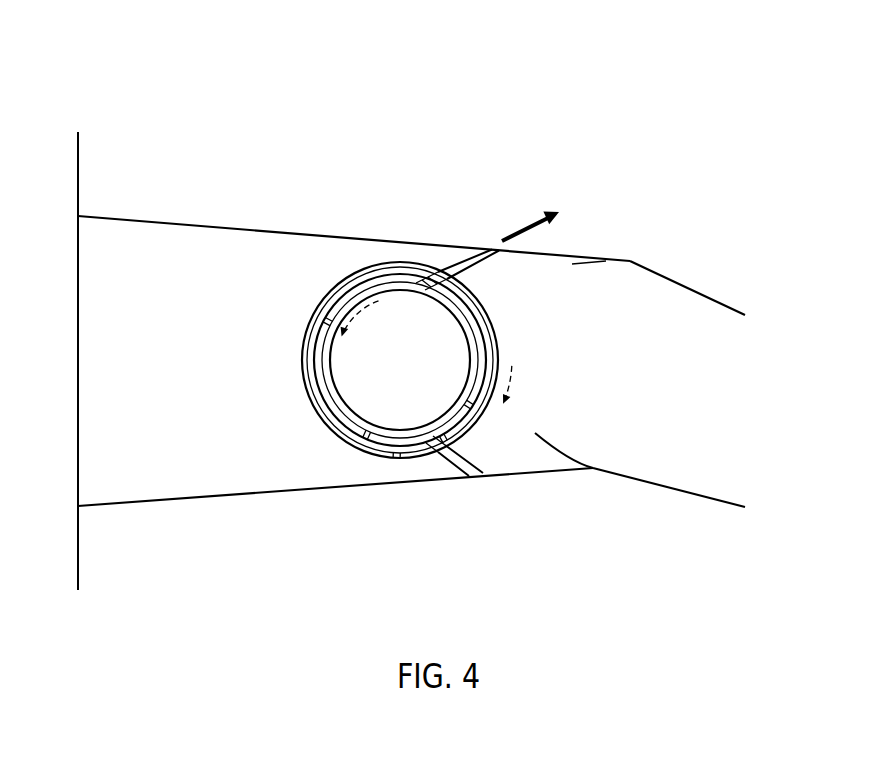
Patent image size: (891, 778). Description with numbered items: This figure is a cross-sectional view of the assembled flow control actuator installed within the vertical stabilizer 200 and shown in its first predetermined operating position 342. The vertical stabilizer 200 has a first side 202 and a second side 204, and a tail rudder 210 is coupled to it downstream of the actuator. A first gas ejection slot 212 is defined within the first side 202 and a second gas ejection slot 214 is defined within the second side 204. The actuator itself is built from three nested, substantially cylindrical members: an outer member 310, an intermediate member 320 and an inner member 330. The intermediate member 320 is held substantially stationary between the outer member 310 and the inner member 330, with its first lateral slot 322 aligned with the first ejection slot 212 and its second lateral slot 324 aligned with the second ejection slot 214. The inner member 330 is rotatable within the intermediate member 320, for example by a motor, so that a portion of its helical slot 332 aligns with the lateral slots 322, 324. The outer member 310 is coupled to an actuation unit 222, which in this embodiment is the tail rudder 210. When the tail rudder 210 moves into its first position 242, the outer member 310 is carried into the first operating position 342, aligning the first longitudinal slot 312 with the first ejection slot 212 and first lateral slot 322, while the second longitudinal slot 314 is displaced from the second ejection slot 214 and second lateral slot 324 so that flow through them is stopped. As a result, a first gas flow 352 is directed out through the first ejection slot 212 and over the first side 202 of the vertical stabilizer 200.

The vertical stabilizer 200 is at (186, 62).
The first side 202 is at (361, 236).
The second side 204 is at (345, 486).
The tail rudder 210 is at (732, 307).
The first gas ejection slot 212 is at (462, 252).
The second gas ejection slot 214 is at (465, 477).
The actuation unit 222 is at (675, 518).
The first position 242 is at (775, 538).
The outer member 310 is at (307, 352).
The first longitudinal slot 312 is at (441, 275).
The second longitudinal slot 314 is at (403, 463).
The intermediate member 320 is at (318, 368).
The first lateral slot 322 is at (458, 285).
The second lateral slot 324 is at (474, 436).
The inner member 330 is at (327, 380).
The helical slot 332 is at (448, 295).
The first predetermined operating position 342 is at (296, 297).
The first gas flow 352 is at (535, 217).